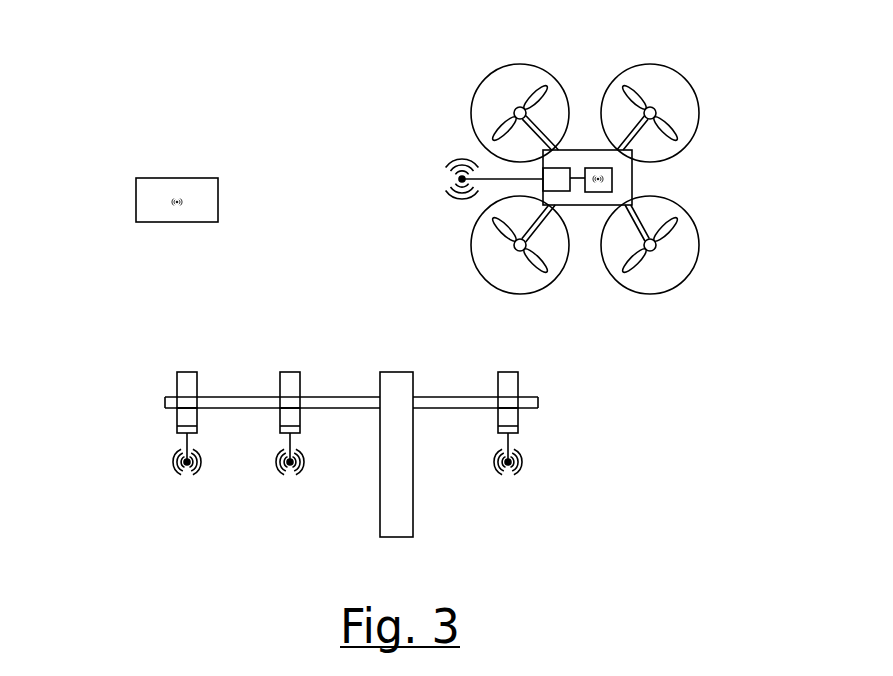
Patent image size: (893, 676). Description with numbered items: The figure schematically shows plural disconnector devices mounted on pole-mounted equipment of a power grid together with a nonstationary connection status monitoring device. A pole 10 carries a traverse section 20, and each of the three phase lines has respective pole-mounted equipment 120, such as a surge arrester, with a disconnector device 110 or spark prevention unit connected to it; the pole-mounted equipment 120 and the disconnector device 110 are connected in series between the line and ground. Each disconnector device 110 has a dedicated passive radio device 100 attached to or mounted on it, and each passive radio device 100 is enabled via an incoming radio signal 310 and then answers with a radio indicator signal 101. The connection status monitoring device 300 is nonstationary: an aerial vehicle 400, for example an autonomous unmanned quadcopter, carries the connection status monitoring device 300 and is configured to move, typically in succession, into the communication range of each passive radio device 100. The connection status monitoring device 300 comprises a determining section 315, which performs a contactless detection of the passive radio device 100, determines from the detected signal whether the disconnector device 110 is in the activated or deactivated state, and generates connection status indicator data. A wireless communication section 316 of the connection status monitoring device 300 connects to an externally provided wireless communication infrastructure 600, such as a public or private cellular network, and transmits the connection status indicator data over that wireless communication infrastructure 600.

The pole 10 is at (408, 515).
The traverse section 20 is at (340, 397).
The passive radio device 100 is at (181, 437).
The sensor wireless signal 101 is at (175, 470).
The disconnector device 110 is at (177, 418).
The pole-mounted equipment 120 is at (585, 373).
The connection status monitoring device 300 is at (632, 173).
The incoming radio signal 310 is at (453, 166).
The determining section 315 is at (567, 168).
The wireless communication section 316 is at (590, 193).
The aerial vehicle 400 is at (678, 72).
The wireless communication infrastructure 600 is at (137, 198).